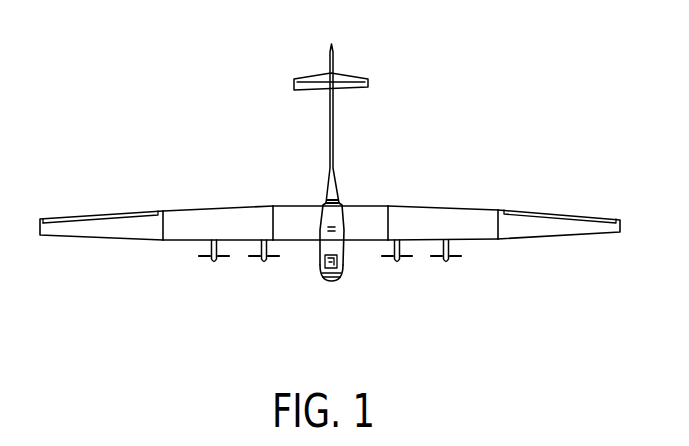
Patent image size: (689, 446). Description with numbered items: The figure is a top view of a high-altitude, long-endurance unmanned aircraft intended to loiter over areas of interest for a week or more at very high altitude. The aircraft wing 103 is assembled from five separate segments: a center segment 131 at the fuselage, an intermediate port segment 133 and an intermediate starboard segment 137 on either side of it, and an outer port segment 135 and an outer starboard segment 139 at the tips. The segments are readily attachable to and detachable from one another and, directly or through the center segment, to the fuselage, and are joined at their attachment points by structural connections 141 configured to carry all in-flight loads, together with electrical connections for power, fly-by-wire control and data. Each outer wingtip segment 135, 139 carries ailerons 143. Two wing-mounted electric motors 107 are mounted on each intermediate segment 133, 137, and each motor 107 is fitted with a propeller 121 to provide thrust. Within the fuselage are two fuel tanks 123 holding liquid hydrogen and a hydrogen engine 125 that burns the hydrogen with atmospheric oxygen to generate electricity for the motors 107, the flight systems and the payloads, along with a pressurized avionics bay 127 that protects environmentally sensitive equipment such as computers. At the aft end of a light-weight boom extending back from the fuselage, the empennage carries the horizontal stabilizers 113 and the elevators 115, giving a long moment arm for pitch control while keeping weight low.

The aircraft wing 103 is at (500, 211).
The wing-mounted electric motor 107 is at (221, 265).
The horizontal stabilizer 113 is at (368, 88).
The elevator 115 is at (317, 72).
The propeller 121 is at (204, 258).
The fuel tank 123 is at (349, 222).
The hydrogen engine 125 is at (346, 279).
The pressurized avionics bay 127 is at (340, 181).
The center segment 131 is at (293, 217).
The intermediate port segment 133 is at (452, 215).
The outer port segment 135 is at (550, 230).
The intermediate starboard segment 137 is at (207, 218).
The outer starboard segment 139 is at (97, 230).
The structural connection 141 is at (163, 240).
The aileron 143 is at (535, 212).